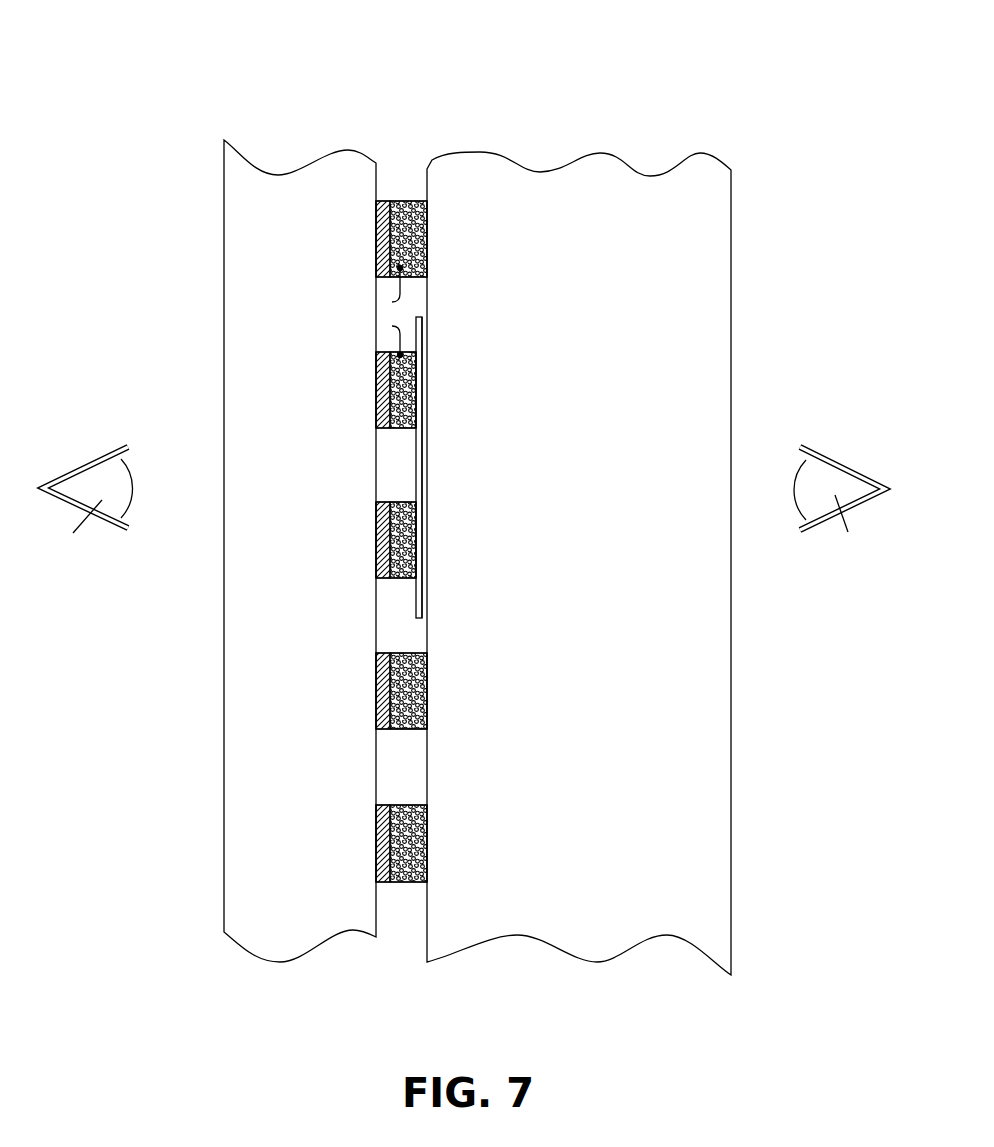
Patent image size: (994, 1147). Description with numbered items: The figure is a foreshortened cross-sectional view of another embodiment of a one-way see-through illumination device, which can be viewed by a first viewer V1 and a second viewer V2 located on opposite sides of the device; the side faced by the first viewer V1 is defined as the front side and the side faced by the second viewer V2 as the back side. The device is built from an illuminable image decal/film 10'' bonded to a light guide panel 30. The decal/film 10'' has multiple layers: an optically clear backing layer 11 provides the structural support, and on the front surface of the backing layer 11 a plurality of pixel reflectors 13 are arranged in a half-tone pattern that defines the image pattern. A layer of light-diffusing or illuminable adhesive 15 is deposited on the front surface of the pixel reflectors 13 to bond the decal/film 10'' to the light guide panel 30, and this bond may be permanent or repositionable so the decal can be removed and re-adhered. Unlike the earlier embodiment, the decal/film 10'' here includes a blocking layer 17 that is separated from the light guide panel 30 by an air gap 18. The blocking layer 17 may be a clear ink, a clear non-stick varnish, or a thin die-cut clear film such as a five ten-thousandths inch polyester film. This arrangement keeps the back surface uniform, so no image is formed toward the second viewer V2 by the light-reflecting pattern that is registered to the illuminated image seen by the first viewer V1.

The illuminable image decal/film 10'' is at (326, 59).
The optically clear backing layer 11 is at (279, 884).
The light guide panel 30 is at (568, 884).
The pixel reflectors 13 is at (380, 716).
The adhesive layer 15 is at (392, 326).
The blocking layer 17 is at (421, 323).
The air gap 18 is at (423, 397).
The first viewer V1 is at (839, 512).
The second viewer V2 is at (88, 512).